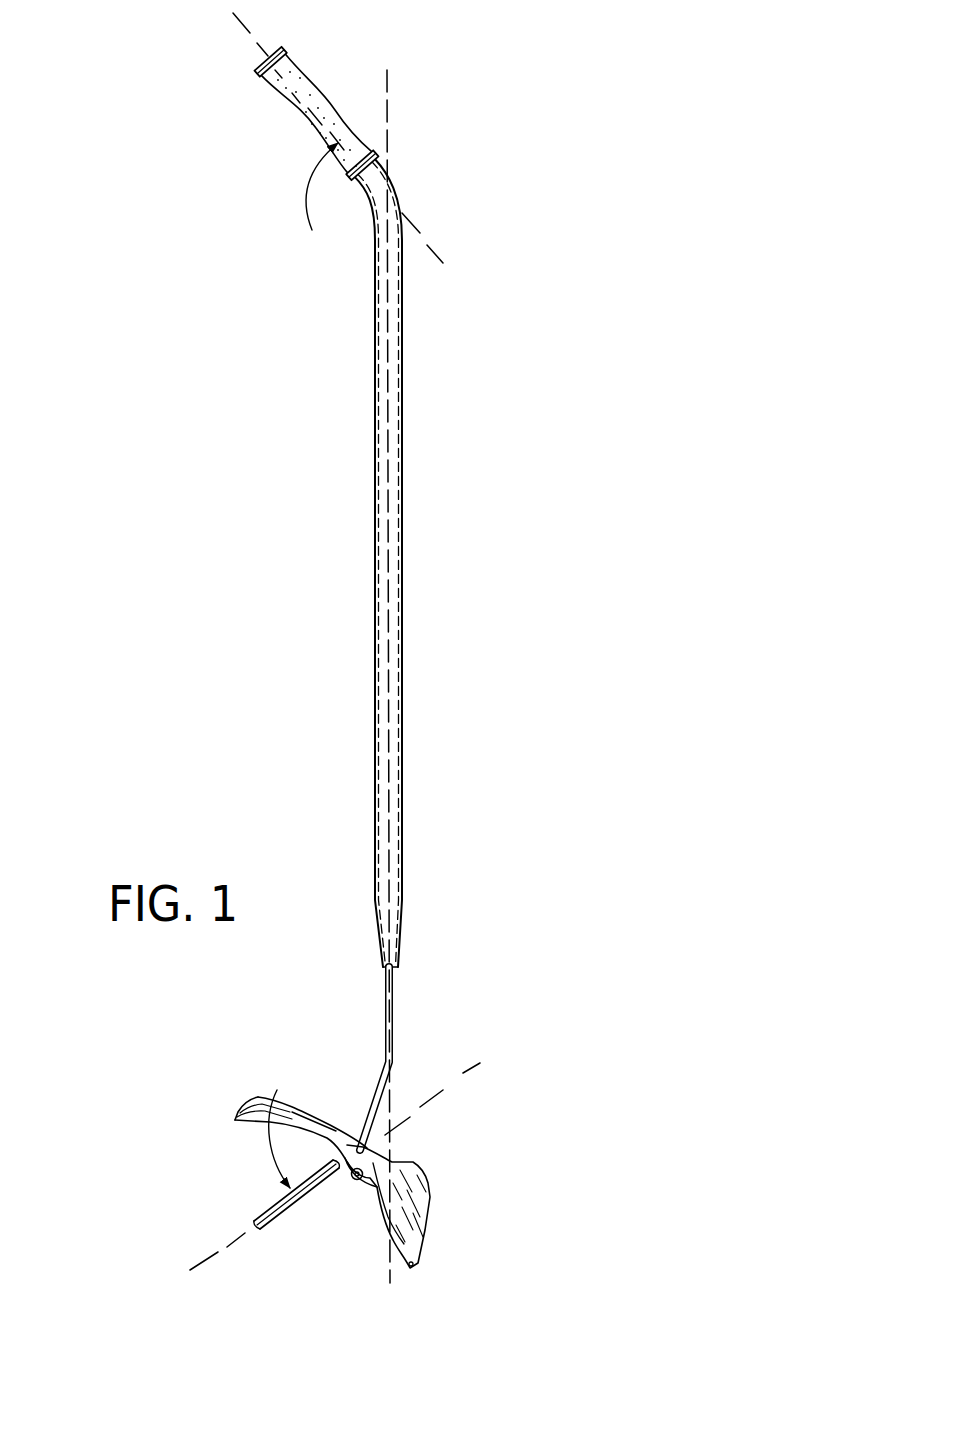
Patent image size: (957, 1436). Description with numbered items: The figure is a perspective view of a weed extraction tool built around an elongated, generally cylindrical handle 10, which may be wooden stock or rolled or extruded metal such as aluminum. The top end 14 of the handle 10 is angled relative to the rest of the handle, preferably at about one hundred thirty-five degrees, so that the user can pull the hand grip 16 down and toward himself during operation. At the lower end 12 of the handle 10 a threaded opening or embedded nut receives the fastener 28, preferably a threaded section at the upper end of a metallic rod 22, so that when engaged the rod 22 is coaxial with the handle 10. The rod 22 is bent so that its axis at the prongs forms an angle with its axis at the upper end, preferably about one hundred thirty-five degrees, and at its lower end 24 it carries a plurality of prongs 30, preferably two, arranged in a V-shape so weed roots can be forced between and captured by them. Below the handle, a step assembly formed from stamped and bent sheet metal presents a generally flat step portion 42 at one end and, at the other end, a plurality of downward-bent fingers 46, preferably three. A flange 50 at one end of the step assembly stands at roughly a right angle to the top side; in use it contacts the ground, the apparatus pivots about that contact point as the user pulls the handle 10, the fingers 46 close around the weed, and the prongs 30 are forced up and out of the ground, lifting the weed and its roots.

The elongated handle 10 is at (359, 666).
The lower end of the handle 12 is at (430, 925).
The top end of the handle 14 is at (430, 210).
The hand grip 16 is at (335, 100).
The rod 22 is at (395, 1072).
The lower end of the rod 24 is at (293, 1169).
The fastener 28 is at (413, 978).
The prongs 30 is at (280, 1205).
The step portion 42 is at (422, 1214).
The fingers 46 is at (245, 1112).
The flange 50 is at (408, 1266).